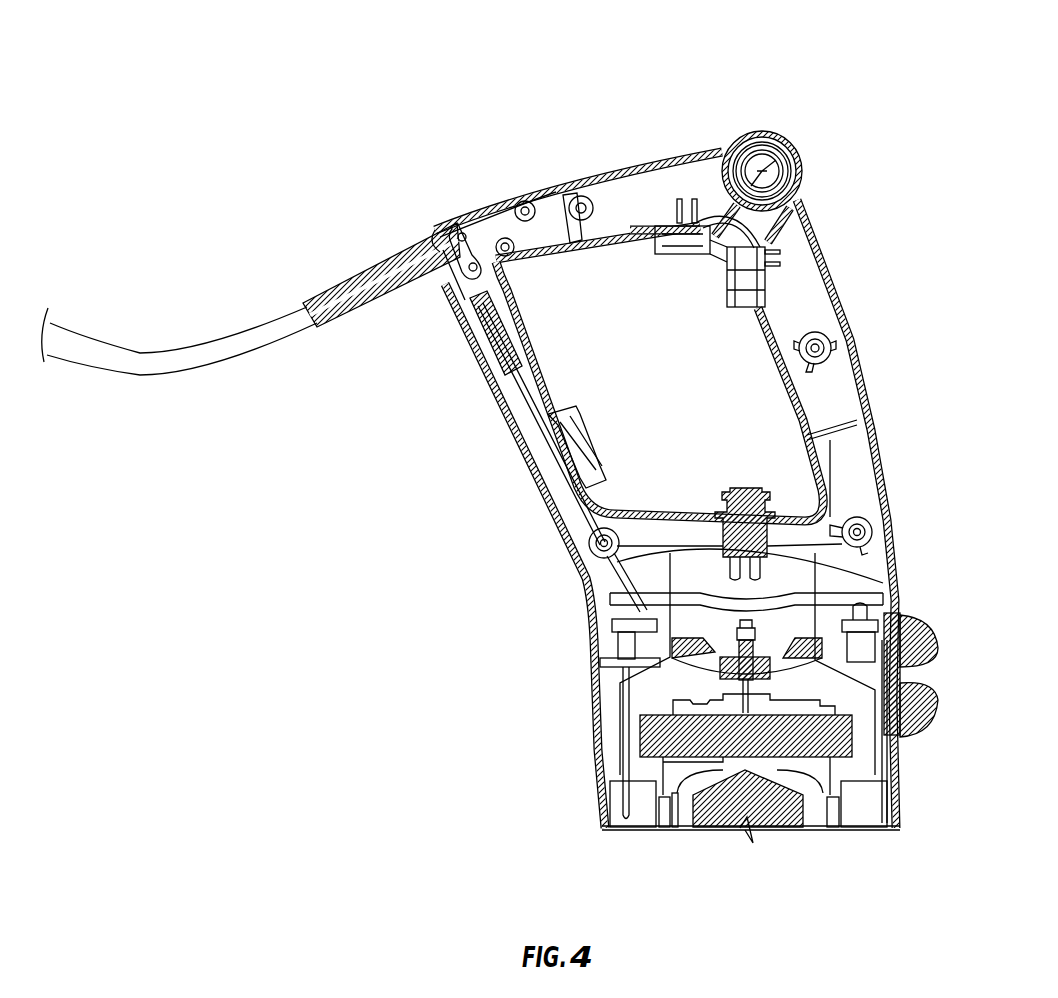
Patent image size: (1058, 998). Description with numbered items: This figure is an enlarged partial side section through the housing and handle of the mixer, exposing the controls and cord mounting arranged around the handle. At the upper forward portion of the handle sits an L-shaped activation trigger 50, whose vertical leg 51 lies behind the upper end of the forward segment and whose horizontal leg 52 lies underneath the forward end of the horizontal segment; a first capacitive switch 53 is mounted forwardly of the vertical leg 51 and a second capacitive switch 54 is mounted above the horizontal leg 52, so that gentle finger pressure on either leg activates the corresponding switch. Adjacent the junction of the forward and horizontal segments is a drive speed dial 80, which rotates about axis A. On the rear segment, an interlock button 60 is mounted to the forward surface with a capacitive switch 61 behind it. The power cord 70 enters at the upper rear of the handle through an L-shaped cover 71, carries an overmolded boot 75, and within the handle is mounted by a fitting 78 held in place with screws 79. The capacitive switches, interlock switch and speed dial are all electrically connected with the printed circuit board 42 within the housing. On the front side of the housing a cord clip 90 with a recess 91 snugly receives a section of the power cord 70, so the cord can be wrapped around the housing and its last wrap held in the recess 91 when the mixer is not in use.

The drive speed dial 80 is at (820, 86).
The L-shaped cover 71 is at (500, 210).
The power cord 70 is at (217, 355).
The overmolded boot 75 is at (345, 288).
The fitting 78 is at (470, 245).
The screws 79 is at (433, 233).
The second capacitive switch 54 is at (688, 228).
The first capacitive switch 53 is at (760, 267).
The horizontal leg 52 is at (680, 262).
The vertical leg 51 is at (733, 293).
The activation trigger 50 is at (797, 284).
The interlock button 60 is at (588, 443).
The capacitive switch 61 is at (560, 467).
The printed circuit board 42 is at (824, 588).
The cord clip 90 is at (925, 658).
The recess 91 is at (928, 674).